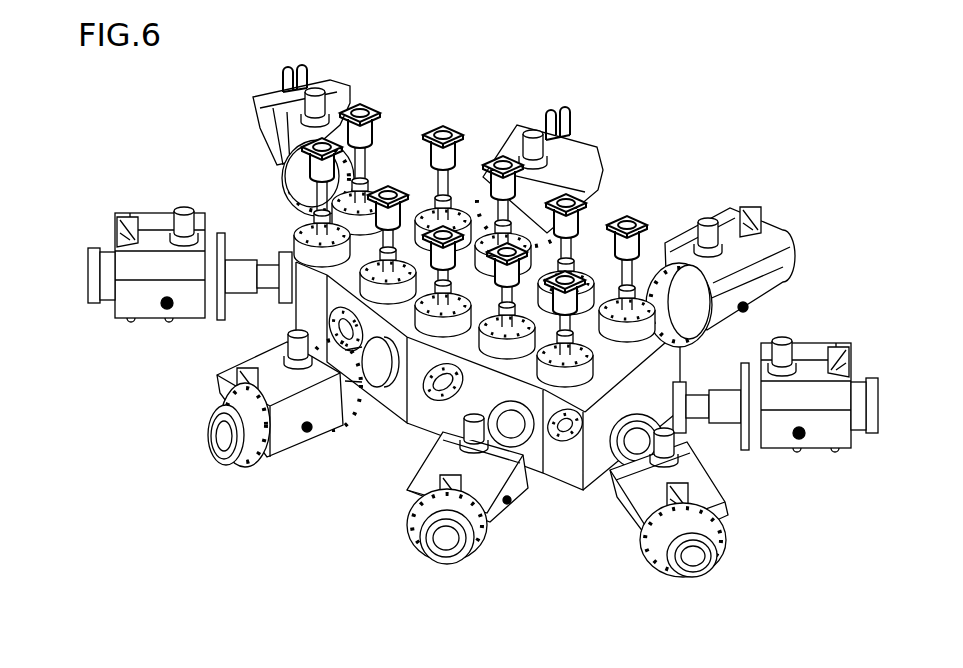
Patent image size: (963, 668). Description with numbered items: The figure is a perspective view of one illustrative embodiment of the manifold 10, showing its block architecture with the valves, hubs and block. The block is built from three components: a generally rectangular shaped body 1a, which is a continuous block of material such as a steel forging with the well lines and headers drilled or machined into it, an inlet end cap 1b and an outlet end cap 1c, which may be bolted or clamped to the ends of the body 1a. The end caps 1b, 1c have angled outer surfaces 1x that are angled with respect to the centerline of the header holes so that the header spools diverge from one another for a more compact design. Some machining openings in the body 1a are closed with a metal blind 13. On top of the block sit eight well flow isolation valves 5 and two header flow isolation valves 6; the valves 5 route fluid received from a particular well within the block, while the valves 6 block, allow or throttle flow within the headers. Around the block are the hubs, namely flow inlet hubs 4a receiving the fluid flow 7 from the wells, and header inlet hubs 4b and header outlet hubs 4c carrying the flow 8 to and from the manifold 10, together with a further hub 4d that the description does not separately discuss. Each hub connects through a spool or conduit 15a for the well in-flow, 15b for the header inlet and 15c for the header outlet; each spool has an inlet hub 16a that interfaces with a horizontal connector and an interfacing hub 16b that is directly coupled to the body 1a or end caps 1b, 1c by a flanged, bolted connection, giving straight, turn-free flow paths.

The generally rectangular shaped body 1a is at (627, 350).
The inlet end cap 1b is at (302, 310).
The outlet end cap 1c is at (668, 372).
The angled outer surfaces 1x is at (603, 455).
The flow inlet hubs 4a is at (531, 110).
The header inlet hubs 4b is at (245, 150).
The header outlet hubs 4c is at (862, 340).
The actuator 4d is at (274, 478).
The well flow isolation valves 5 is at (461, 123).
The header flow isolation valves 6 is at (378, 100).
The fluid flow 7 is at (567, 97).
The flow of fluid 8 is at (292, 58).
The manifold 10 is at (708, 108).
The metal blind 13 is at (574, 442).
The spool or conduit 15a is at (360, 386).
The spool or conduit 15b is at (100, 250).
The spool or conduit 15c is at (727, 412).
The inlet hub 16a is at (457, 565).
The interfacing hub 16b is at (527, 432).